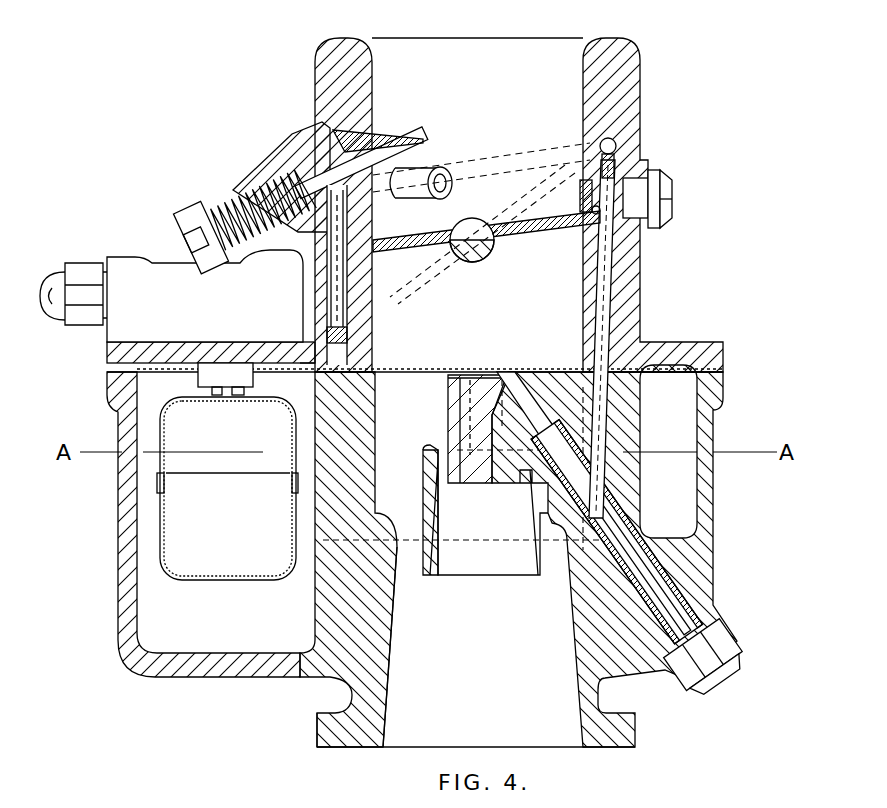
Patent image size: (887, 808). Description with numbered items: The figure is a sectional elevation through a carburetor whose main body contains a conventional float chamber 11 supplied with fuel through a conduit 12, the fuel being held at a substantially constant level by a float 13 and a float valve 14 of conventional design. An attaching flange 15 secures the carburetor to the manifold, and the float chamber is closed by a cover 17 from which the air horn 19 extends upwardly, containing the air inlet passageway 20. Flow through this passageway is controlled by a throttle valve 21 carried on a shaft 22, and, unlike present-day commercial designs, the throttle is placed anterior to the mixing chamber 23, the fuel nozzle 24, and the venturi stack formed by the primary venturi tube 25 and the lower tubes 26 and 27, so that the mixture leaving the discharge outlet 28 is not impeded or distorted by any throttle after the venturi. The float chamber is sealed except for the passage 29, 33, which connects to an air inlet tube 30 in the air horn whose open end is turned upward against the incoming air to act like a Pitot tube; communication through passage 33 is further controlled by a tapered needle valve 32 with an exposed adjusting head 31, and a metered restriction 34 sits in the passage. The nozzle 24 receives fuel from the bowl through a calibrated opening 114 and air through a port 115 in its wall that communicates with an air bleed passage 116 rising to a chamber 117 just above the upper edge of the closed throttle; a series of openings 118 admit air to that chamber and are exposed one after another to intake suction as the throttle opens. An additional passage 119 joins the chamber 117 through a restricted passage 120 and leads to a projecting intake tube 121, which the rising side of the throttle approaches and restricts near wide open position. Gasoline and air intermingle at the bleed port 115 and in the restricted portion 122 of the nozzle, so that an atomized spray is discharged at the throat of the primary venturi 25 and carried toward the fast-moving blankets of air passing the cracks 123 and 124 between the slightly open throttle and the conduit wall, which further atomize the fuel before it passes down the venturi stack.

The float chamber 11 is at (145, 588).
The conduit 12 is at (52, 286).
The float 13 is at (160, 535).
The float valve 14 is at (200, 378).
The attaching flange 15 is at (316, 727).
The cover 17 is at (113, 358).
The air horn 19 is at (628, 104).
The air inlet passageway 20 is at (505, 58).
The throttle valve 21 is at (400, 247).
The shaft 22 is at (492, 250).
The mixing chamber 23 is at (491, 405).
The fuel nozzle 24 is at (505, 371).
The primary venturi tube 25 is at (473, 428).
The venturi tube 26 is at (440, 502).
The venturi tube 27 is at (398, 580).
The discharge outlet 28 is at (420, 727).
The passage 29 is at (302, 368).
The air inlet tube 30 is at (405, 140).
The adjusting head 31 is at (188, 228).
The tapered needle valve 32 is at (317, 146).
The passage 33 is at (343, 288).
The metered restriction 34 is at (348, 335).
The calibrated opening 114 is at (690, 633).
The port 115 is at (601, 504).
The air bleed passage 116 is at (610, 323).
The chamber 117 is at (622, 212).
The openings 118 is at (591, 207).
The additional passage 119 is at (614, 146).
The restricted passage 120 is at (630, 172).
The projecting intake tube 121 is at (455, 168).
The restricted portion 122 is at (545, 470).
The crack 123 is at (377, 243).
The crack 124 is at (582, 229).